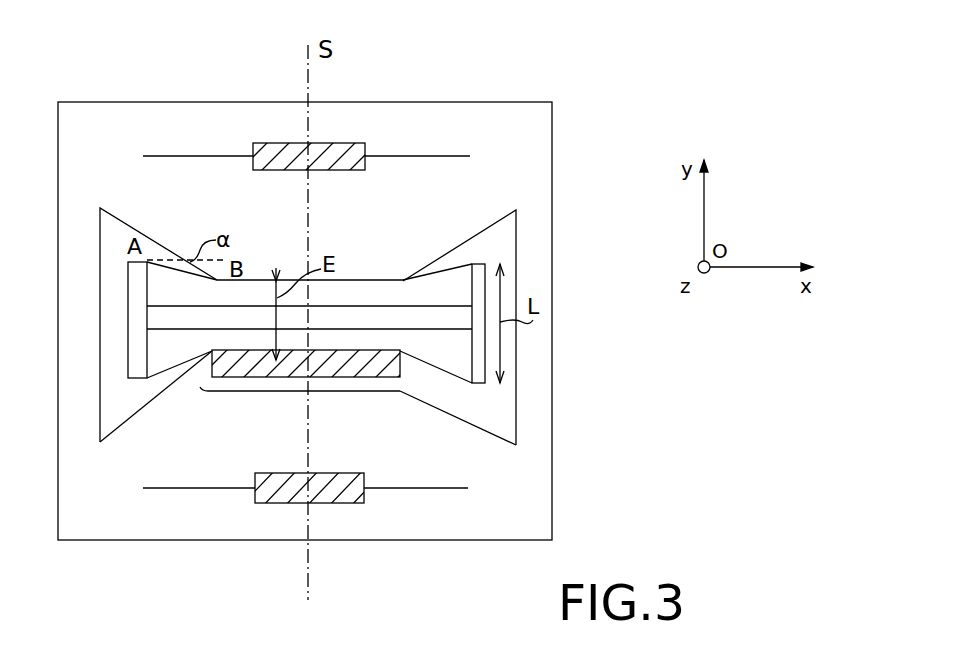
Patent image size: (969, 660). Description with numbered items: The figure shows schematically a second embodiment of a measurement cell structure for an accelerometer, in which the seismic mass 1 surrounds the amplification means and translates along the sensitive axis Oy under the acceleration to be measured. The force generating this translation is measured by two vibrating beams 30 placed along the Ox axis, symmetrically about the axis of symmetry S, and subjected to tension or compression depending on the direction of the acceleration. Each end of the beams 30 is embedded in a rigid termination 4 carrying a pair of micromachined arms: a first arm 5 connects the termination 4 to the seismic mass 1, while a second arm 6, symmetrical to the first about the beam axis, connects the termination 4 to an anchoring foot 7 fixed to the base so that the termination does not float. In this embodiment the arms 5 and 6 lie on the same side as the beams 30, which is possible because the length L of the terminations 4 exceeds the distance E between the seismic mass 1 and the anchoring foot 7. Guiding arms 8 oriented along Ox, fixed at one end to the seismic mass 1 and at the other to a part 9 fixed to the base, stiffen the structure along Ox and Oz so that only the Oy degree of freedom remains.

The seismic mass 1 is at (82, 172).
The rigid termination 4 is at (137, 343).
The first micromachined arm 5 is at (149, 283).
The second micromachined arm 6 is at (149, 368).
The anchoring foot 7 is at (347, 368).
The guiding arm 8 is at (450, 156).
The part fixed to the base 9 is at (348, 152).
The vibrating beam 30 is at (197, 315).